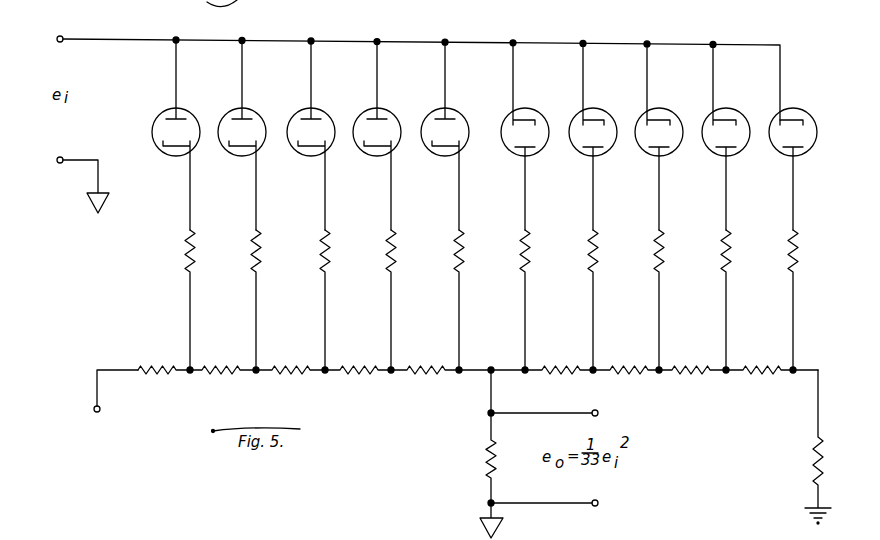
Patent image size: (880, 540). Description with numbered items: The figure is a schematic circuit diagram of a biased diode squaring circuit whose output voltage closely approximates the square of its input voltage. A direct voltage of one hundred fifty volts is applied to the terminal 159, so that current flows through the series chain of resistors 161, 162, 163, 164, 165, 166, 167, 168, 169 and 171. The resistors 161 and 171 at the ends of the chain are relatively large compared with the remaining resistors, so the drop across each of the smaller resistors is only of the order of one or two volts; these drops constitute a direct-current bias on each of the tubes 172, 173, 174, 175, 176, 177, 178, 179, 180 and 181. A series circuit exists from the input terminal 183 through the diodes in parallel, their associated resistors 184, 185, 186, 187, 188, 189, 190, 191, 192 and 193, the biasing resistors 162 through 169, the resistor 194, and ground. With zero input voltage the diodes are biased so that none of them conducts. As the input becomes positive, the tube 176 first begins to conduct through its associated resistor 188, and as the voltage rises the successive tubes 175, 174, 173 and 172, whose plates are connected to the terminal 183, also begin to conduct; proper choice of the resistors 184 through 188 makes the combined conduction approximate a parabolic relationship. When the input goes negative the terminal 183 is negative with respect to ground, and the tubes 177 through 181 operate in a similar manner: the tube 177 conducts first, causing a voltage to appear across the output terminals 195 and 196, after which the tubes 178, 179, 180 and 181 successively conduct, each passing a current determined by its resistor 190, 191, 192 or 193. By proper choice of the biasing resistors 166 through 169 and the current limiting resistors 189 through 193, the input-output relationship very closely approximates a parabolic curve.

The terminal 159 is at (93, 412).
The resistor 161 is at (151, 360).
The resistor 162 is at (220, 360).
The resistor 163 is at (289, 360).
The resistor 164 is at (356, 360).
The resistor 165 is at (426, 360).
The resistor 166 is at (559, 362).
The resistor 167 is at (625, 360).
The resistor 168 is at (692, 360).
The resistor 169 is at (760, 360).
The resistor 171 is at (812, 452).
The tube 172 is at (189, 108).
The tube 173 is at (255, 108).
The tube 174 is at (324, 108).
The tube 175 is at (390, 108).
The tube 176 is at (458, 108).
The tube 177 is at (538, 108).
The tube 178 is at (606, 108).
The tube 179 is at (672, 108).
The tube 180 is at (739, 108).
The tube 181 is at (806, 108).
The terminal 183 is at (64, 34).
The resistor 184 is at (185, 217).
The resistor 185 is at (260, 227).
The resistor 186 is at (329, 227).
The resistor 187 is at (395, 227).
The resistor 188 is at (463, 227).
The resistor 189 is at (529, 227).
The resistor 190 is at (597, 227).
The resistor 191 is at (663, 227).
The resistor 192 is at (730, 227).
The resistor 193 is at (797, 227).
The resistor 194 is at (488, 460).
The terminal 195 is at (598, 412).
The terminal 196 is at (598, 504).